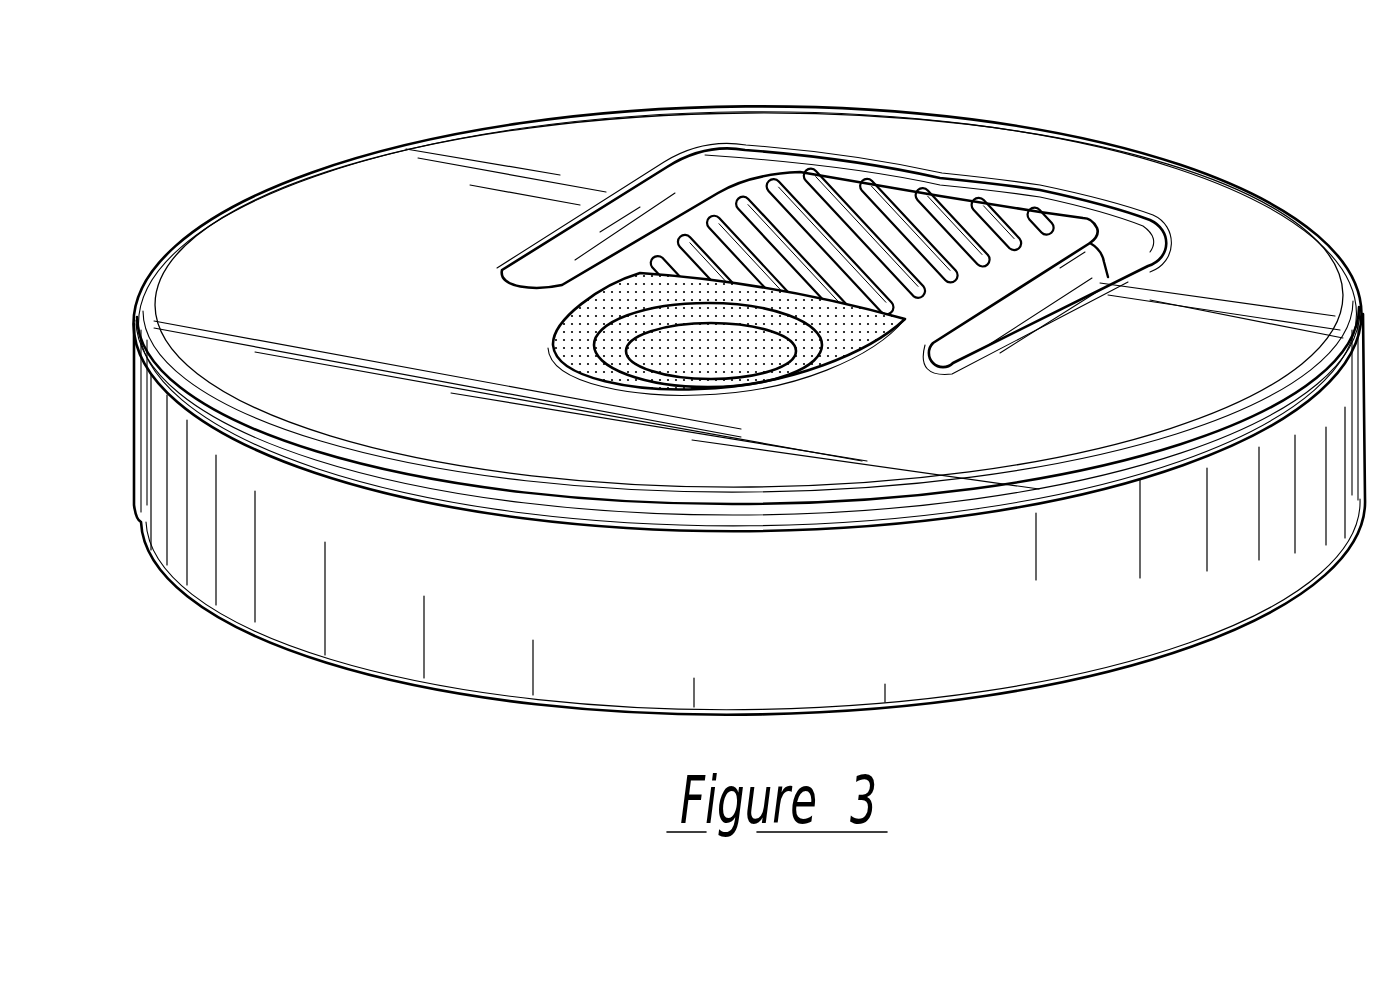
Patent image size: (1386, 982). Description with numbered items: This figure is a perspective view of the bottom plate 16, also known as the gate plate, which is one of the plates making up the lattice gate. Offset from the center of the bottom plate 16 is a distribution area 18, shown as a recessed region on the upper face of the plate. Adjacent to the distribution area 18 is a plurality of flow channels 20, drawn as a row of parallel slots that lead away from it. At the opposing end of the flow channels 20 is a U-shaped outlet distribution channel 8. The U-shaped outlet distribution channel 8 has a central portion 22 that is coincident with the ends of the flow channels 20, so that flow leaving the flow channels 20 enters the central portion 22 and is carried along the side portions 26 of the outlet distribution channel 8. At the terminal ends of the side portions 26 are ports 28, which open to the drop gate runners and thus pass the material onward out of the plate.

The U-shaped outlet distribution channel 8 is at (1128, 230).
The bottom plate 16 is at (1111, 652).
The distribution area 18 is at (680, 358).
The flow channels 20 is at (928, 300).
The central portion 22 is at (928, 186).
The side portions 26 is at (1033, 305).
The ports 28 is at (960, 366).